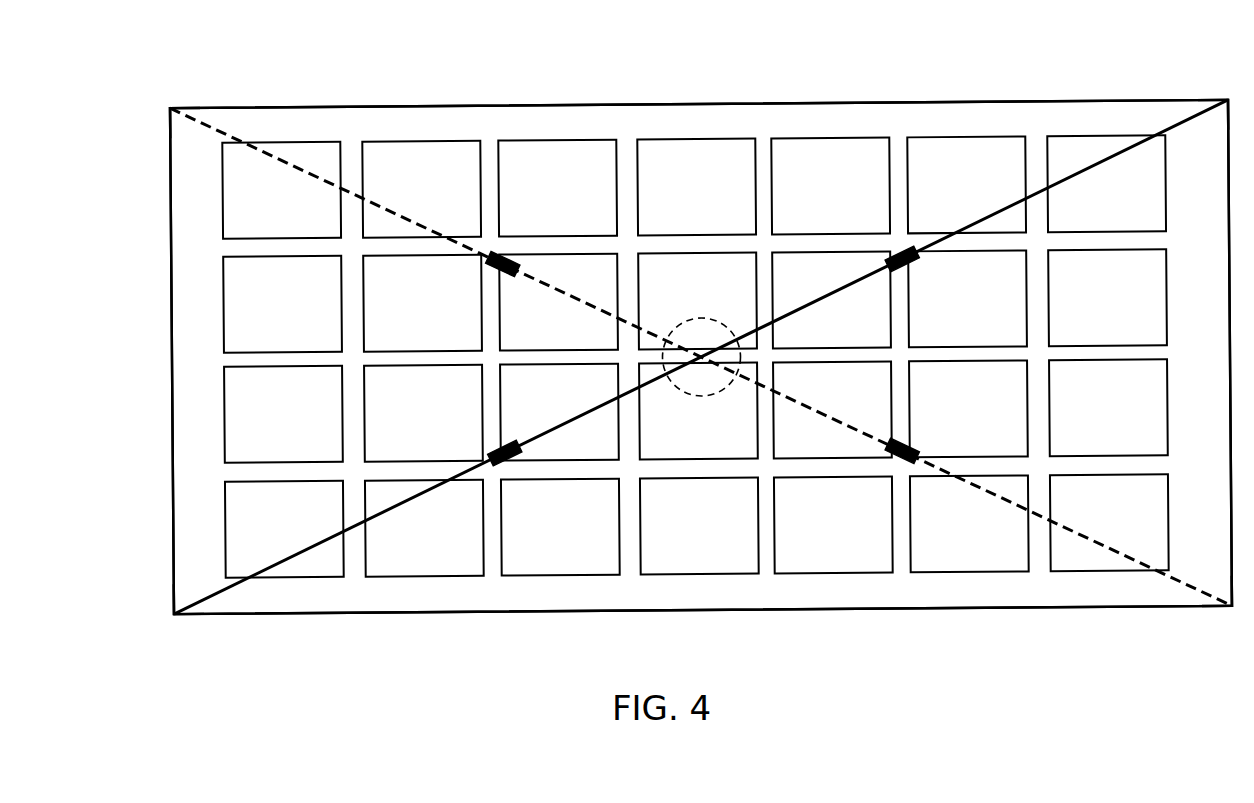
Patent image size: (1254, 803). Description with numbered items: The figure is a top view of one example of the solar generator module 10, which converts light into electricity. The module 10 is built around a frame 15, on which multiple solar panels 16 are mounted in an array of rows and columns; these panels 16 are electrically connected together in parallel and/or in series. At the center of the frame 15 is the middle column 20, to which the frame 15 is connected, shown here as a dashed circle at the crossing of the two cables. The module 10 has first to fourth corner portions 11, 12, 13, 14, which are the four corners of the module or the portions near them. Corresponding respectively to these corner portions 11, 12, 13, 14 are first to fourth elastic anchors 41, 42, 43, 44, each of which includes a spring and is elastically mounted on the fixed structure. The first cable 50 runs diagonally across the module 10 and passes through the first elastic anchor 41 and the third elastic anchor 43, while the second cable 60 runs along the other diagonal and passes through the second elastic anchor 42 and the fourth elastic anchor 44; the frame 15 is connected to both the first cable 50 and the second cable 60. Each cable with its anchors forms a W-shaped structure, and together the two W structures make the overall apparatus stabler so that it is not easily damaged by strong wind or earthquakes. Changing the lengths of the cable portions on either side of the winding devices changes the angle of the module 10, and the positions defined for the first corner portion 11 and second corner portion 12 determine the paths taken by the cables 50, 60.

The solar generator module 10 is at (819, 101).
The first corner portion 11 is at (1226, 102).
The second corner portion 12 is at (1203, 605).
The third corner portion 13 is at (203, 615).
The fourth corner portion 14 is at (196, 106).
The frame 15 is at (492, 118).
The solar panels 16 is at (316, 133).
The middle column 20 is at (702, 317).
The first elastic anchor 41 is at (911, 266).
The second elastic anchor 42 is at (911, 445).
The third elastic anchor 43 is at (498, 449).
The fourth elastic anchor 44 is at (492, 268).
The first cable 50 is at (990, 213).
The second cable 60 is at (428, 226).